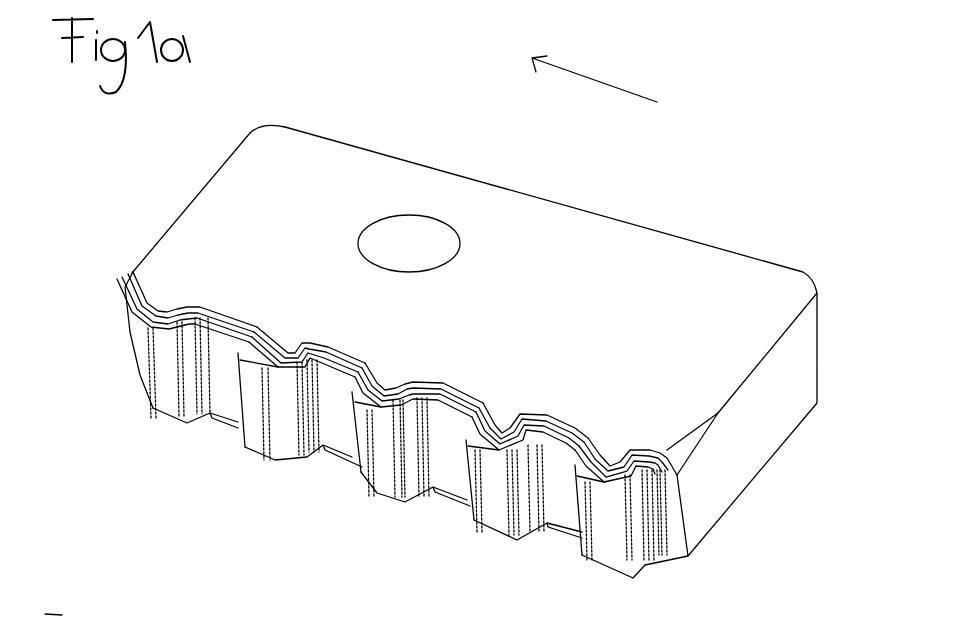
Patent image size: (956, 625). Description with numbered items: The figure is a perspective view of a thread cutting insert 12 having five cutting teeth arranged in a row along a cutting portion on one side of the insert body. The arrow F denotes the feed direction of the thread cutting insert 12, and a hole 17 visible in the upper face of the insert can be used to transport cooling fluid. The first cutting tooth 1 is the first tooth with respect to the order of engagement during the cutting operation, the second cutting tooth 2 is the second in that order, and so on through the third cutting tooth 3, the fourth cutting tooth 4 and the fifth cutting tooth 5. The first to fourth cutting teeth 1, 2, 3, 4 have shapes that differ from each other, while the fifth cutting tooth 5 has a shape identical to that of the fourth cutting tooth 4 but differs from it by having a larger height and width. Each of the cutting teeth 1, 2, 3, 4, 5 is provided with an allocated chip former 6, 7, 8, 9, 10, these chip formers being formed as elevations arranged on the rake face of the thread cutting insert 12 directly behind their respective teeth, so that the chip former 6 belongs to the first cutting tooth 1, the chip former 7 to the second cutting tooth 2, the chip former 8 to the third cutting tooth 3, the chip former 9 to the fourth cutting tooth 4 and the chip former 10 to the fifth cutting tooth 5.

The first cutting tooth 1 is at (162, 357).
The second cutting tooth 2 is at (253, 390).
The third cutting tooth 3 is at (378, 433).
The fourth cutting tooth 4 is at (487, 470).
The fifth cutting tooth 5 is at (602, 507).
The chip former 6 is at (165, 302).
The chip former 7 is at (275, 335).
The chip former 8 is at (387, 377).
The chip former 9 is at (495, 412).
The chip former 10 is at (602, 452).
The thread cutting insert 12 is at (708, 227).
The hole 17 is at (403, 247).
The feed direction F is at (594, 73).